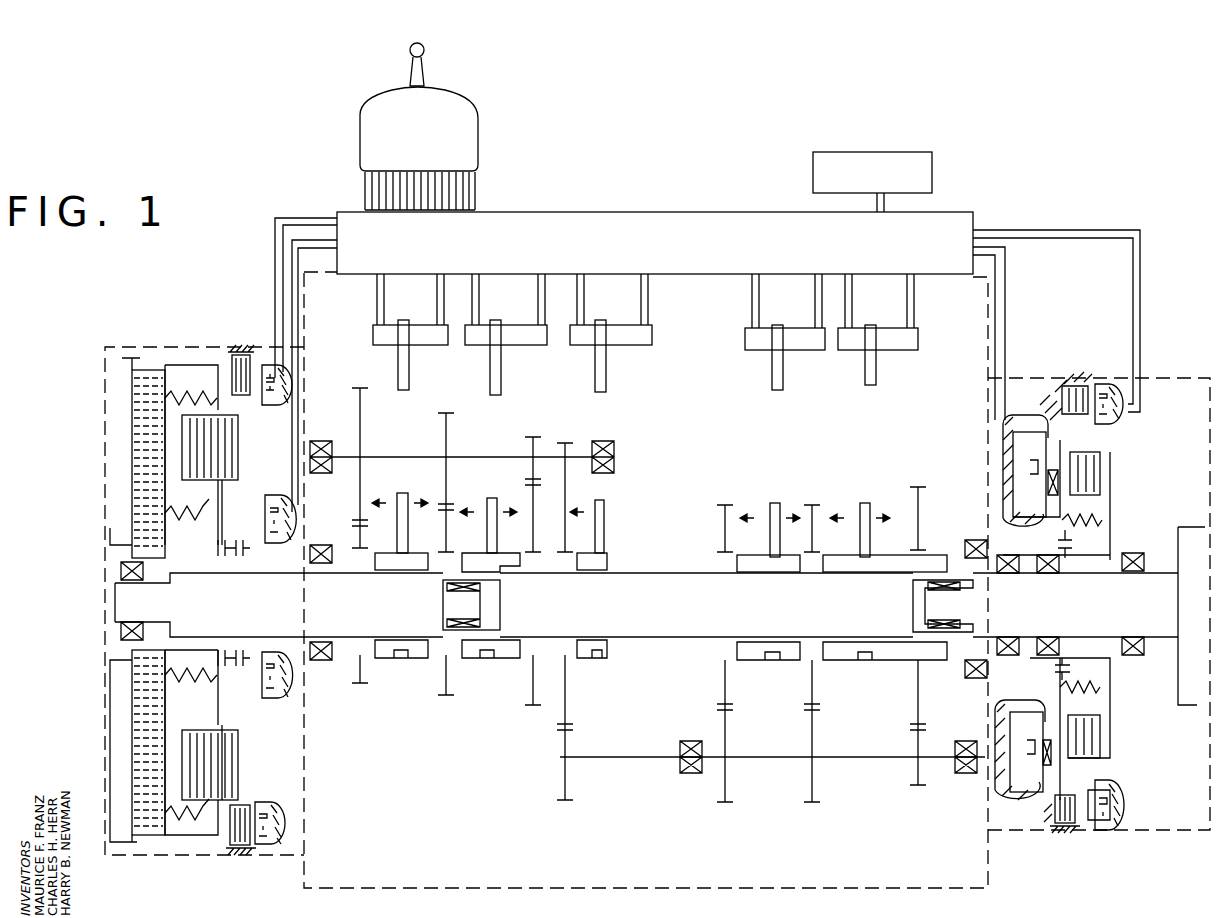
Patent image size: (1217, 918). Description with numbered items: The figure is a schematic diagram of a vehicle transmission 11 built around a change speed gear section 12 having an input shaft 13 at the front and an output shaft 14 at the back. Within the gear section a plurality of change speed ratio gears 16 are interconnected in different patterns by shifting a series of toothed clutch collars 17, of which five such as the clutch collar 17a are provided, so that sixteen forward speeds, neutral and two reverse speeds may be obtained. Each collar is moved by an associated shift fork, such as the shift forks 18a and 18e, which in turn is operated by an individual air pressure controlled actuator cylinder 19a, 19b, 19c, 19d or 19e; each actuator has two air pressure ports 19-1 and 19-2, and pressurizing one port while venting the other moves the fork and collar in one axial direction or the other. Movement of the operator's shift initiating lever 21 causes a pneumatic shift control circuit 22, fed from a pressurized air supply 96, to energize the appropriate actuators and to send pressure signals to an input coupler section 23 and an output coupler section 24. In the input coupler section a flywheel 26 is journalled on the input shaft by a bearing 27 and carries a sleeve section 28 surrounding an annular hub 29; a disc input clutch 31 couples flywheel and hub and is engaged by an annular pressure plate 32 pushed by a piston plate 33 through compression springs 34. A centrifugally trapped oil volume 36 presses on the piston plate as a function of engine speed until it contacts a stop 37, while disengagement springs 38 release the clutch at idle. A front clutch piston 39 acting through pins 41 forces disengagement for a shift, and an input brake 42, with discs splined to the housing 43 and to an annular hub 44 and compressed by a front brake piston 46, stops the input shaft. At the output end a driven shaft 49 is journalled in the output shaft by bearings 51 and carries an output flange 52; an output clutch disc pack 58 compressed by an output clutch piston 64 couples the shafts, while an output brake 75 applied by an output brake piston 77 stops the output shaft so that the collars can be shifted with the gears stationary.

The transmission 11 is at (1022, 158).
The change speed gear section 12 is at (374, 891).
The input shaft 13 is at (346, 626).
The output shaft 14 is at (994, 556).
The change speed ratio gears 16 is at (534, 508).
The clutch collars 17 is at (606, 564).
The clutch collar 17a is at (410, 566).
The shift fork 18a is at (408, 496).
The shift fork 18e is at (600, 502).
The air pressure port 19-1 is at (378, 298).
The air pressure port 19-2 is at (440, 287).
The actuator cylinder 19a is at (390, 347).
The actuator cylinder 19b is at (516, 337).
The actuator cylinder 19c is at (892, 350).
The actuator cylinder 19d is at (758, 350).
The actuator cylinder 19e is at (618, 340).
The shift initiating lever 21 is at (462, 97).
The pneumatic shift control circuit 22 is at (496, 211).
The input coupler section 23 is at (94, 638).
The output coupler section 24 is at (1162, 836).
The flywheel 26 is at (132, 393).
The bearing 27 is at (120, 576).
The sleeve section 28 is at (228, 408).
The annular hub 29 is at (222, 710).
The disc input clutch 31 is at (240, 757).
The annular pressure plate 32 is at (182, 720).
The piston plate 33 is at (168, 832).
The compression springs 34 is at (184, 672).
The oil volume 36 is at (118, 503).
The stop 37 is at (160, 438).
The disengagement springs 38 is at (176, 402).
The front clutch piston 39 is at (280, 548).
The pins 41 is at (218, 548).
The input brake 42 is at (215, 838).
The housing 43 is at (234, 852).
The annular hub 44 is at (238, 736).
The front brake piston 46 is at (254, 820).
The driven shaft 49 is at (1078, 584).
The bearings 51 is at (922, 602).
The output flange 52 is at (1190, 700).
The output clutch disc pack 58 is at (1114, 739).
The output clutch piston 64 is at (1040, 710).
The output brake 75 is at (1062, 824).
The output brake piston 77 is at (1100, 805).
The pressurized air supply 96 is at (904, 152).